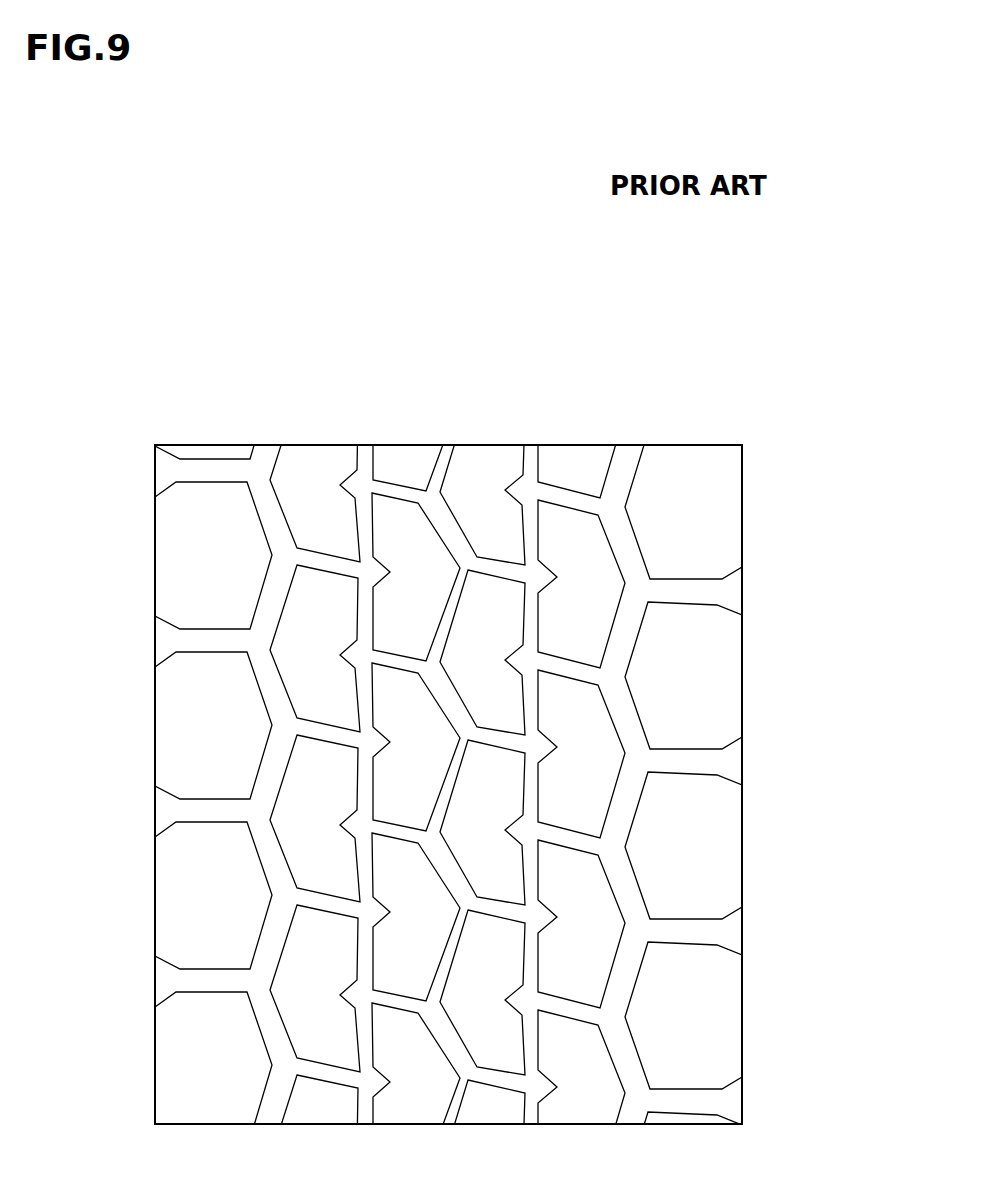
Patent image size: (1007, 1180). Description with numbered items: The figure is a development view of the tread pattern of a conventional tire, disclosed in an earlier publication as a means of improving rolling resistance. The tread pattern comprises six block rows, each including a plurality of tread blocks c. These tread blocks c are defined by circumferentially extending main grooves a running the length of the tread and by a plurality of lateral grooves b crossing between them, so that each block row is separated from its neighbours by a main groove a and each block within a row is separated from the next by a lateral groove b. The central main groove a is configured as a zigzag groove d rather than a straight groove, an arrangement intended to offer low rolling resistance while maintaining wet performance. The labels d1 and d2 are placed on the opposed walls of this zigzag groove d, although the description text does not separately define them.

The main groove a is at (267, 470).
The lateral groove b is at (695, 595).
The tread block c is at (206, 906).
The zigzag groove d is at (443, 467).
The groove wall d1 is at (450, 613).
The groove wall d2 is at (455, 715).